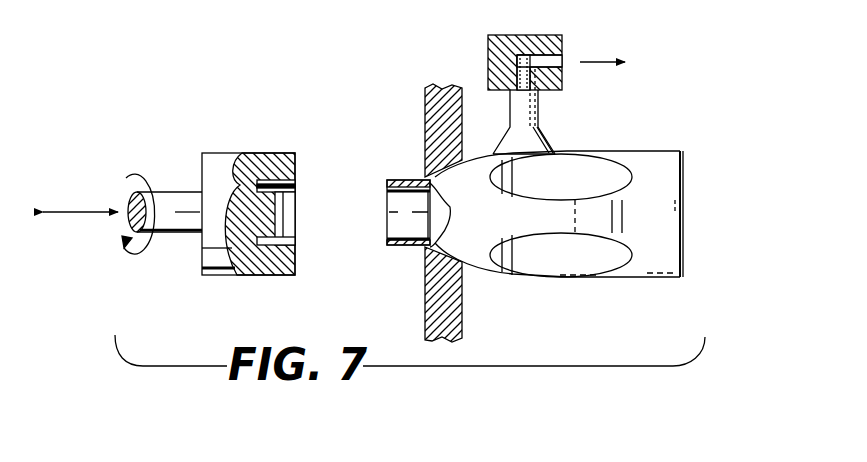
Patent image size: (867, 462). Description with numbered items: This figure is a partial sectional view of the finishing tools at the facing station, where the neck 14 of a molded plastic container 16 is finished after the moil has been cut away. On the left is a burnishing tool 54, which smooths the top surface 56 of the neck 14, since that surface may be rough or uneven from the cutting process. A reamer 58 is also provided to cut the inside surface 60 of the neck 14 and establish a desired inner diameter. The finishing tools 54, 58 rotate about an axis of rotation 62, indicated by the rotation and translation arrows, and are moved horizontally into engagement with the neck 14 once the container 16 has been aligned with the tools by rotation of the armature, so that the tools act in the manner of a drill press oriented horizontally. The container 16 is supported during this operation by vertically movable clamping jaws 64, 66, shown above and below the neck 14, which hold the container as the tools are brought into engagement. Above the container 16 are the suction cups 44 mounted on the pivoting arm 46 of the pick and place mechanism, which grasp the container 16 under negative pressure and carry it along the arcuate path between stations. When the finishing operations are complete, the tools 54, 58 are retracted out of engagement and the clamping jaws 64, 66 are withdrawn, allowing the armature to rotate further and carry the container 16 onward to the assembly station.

The neck 14 is at (408, 248).
The molded plastic container 16 is at (672, 202).
The suction cups 44 is at (548, 142).
The pivoting arm 46 is at (548, 43).
The burnishing tool 54 is at (238, 185).
The top surface 56 is at (387, 183).
The reamer 58 is at (258, 180).
The inside surface 60 is at (387, 215).
The axis of rotation 62 is at (93, 212).
The clamping jaw 64 is at (430, 110).
The clamping jaw 66 is at (462, 312).